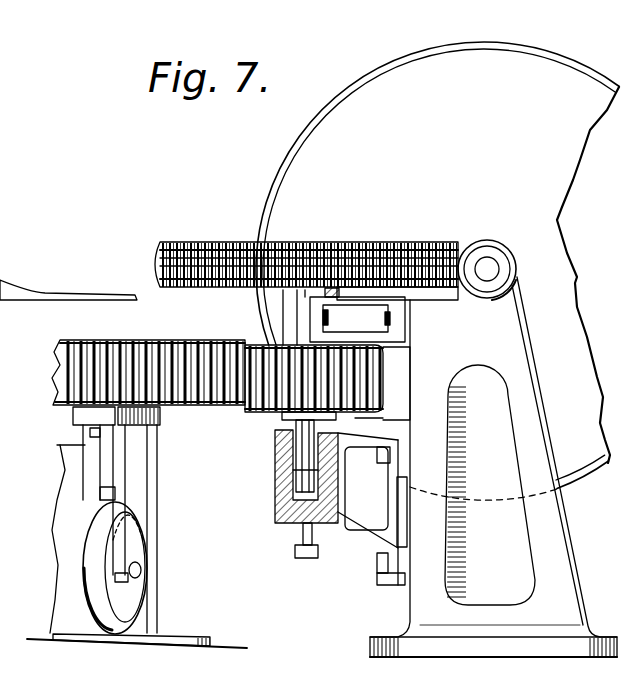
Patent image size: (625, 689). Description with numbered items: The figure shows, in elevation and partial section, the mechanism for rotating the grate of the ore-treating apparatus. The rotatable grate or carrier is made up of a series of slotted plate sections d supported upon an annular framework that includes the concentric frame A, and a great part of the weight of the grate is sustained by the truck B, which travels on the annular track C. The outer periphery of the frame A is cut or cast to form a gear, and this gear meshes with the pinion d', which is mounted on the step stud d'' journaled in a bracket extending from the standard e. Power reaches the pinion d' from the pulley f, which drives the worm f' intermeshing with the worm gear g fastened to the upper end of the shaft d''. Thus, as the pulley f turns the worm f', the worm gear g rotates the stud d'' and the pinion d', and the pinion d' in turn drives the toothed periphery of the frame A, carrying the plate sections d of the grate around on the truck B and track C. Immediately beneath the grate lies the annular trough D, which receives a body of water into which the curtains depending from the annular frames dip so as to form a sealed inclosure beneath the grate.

The pulley f is at (437, 271).
The worm f' is at (497, 249).
The worm gear g is at (215, 240).
The concentric frame A is at (192, 410).
The pinion d' is at (310, 418).
The step stud d'' is at (285, 494).
The standard e is at (493, 467).
The truck B is at (138, 495).
The annular track C is at (170, 633).
The annular trough D is at (64, 566).
The plate section d is at (46, 539).